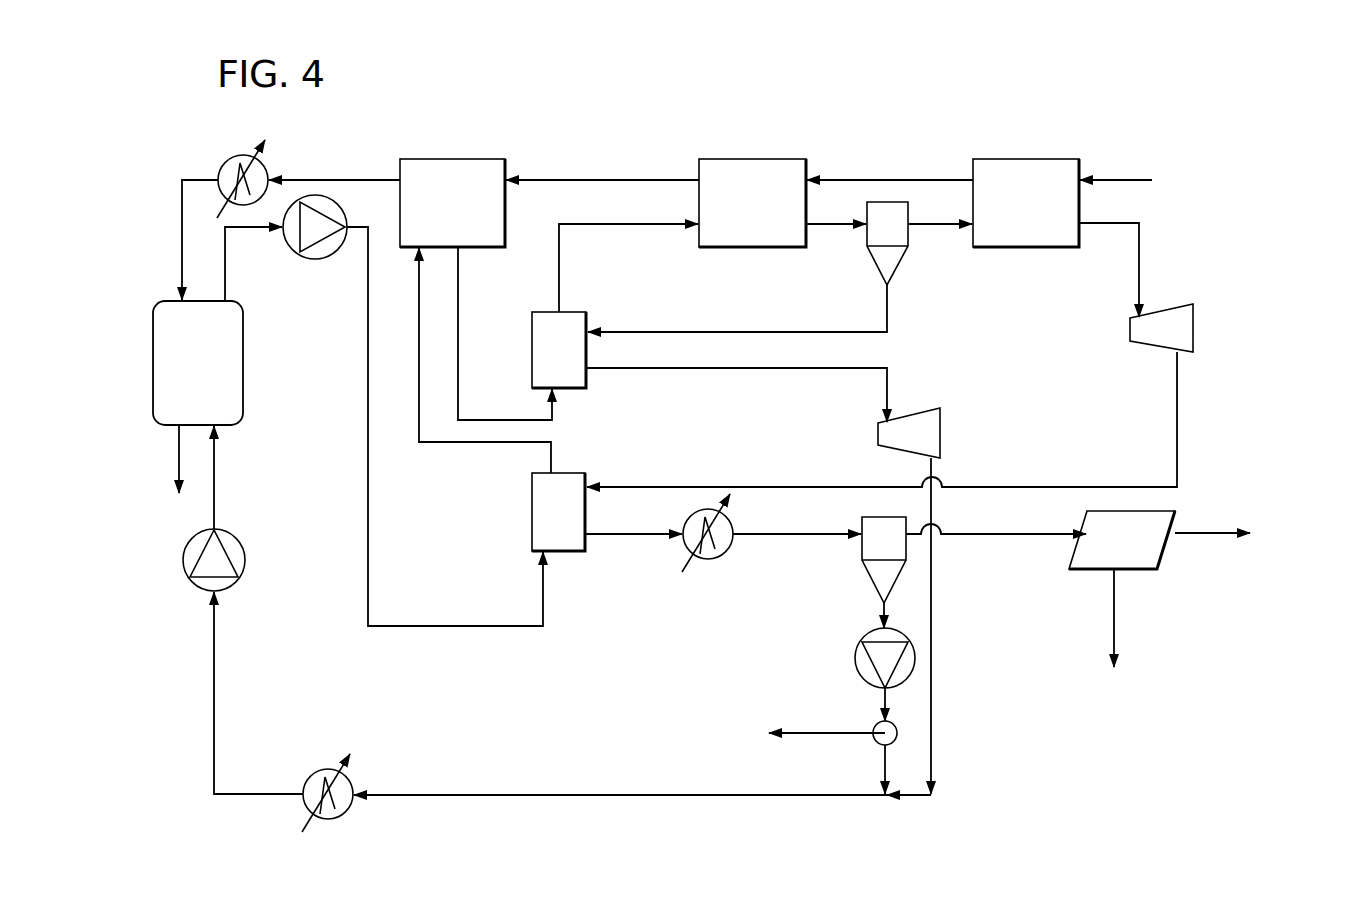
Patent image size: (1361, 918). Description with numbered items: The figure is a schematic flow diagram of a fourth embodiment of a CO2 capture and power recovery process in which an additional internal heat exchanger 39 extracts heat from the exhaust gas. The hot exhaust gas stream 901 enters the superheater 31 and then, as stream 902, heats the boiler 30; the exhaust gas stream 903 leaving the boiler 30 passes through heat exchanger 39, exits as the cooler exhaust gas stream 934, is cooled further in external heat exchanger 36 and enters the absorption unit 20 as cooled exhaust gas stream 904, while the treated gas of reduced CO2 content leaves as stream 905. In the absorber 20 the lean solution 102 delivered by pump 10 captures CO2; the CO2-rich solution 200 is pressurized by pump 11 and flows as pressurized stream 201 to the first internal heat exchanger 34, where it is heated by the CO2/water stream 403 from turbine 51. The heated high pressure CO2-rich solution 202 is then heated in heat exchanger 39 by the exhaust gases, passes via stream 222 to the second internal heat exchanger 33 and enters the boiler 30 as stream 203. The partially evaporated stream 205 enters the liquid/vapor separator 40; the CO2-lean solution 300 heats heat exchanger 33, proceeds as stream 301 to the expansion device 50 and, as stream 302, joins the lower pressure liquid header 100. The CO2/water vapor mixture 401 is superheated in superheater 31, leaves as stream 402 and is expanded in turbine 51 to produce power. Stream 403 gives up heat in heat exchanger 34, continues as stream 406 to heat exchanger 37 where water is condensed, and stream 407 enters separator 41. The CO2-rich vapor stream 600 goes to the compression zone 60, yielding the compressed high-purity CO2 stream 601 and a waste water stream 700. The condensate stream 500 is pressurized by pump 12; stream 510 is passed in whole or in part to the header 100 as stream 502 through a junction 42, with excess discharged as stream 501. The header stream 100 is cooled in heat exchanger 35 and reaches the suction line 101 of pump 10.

The pump 10 is at (182, 557).
The pump 11 is at (340, 204).
The pump 12 is at (856, 645).
The absorption unit 20 is at (243, 367).
The boiler 30 is at (755, 159).
The superheater 31 is at (1035, 159).
The second internal heat exchanger 33 is at (532, 363).
The first internal heat exchanger 34 is at (532, 518).
The heat exchanger 35 is at (310, 775).
The external heat exchanger 36 is at (238, 157).
The heat exchanger 37 is at (693, 513).
The additional internal heat exchanger 39 is at (455, 159).
The liquid/vapor separator 40 is at (903, 265).
The separator 41 is at (862, 573).
The valve 42 is at (872, 726).
The expansion device 50 is at (941, 437).
The turbine 51 is at (1194, 324).
The compression zone 60 is at (1140, 569).
The lower pressure process liquid header 100 is at (613, 793).
The suction line 101 is at (214, 655).
The CO2-lean solution stream 102 is at (216, 478).
The CO2-rich solution stream 200 is at (226, 268).
The pressurized stream 201 is at (543, 597).
The high pressure CO2-rich solution stream 202 is at (415, 390).
The high pressure CO2-rich solution stream 203 is at (559, 285).
The high pressure CO2-rich solution stream 205 is at (834, 226).
The stream 222 is at (456, 323).
The pressurized CO2-lean solution stream 300 is at (680, 332).
The stream 301 is at (758, 370).
The stream 302 is at (932, 665).
The CO2/water vapor mixture 401 is at (943, 225).
The superheated CO2/water mixture 402 is at (1139, 263).
The CO2/water stream 403 is at (1178, 412).
The CO2/water stream 406 is at (610, 538).
The stream 407 is at (762, 538).
The condensate stream 500 is at (884, 607).
The stream 501 is at (807, 733).
The stream 502 is at (885, 762).
The stream 510 is at (882, 690).
The CO2-rich stream 600 is at (980, 534).
The compressed high-purity CO2 stream 601 is at (1223, 538).
The waste water stream 700 is at (1117, 630).
The hot exhaust gas stream 901 is at (1130, 178).
The hot exhaust gas stream 902 is at (893, 178).
The exhaust gas stream 903 is at (646, 178).
The cooled exhaust gas stream 904 is at (216, 180).
The exhaust gas stream 905 is at (179, 455).
The cooler exhaust gas stream 934 is at (333, 178).